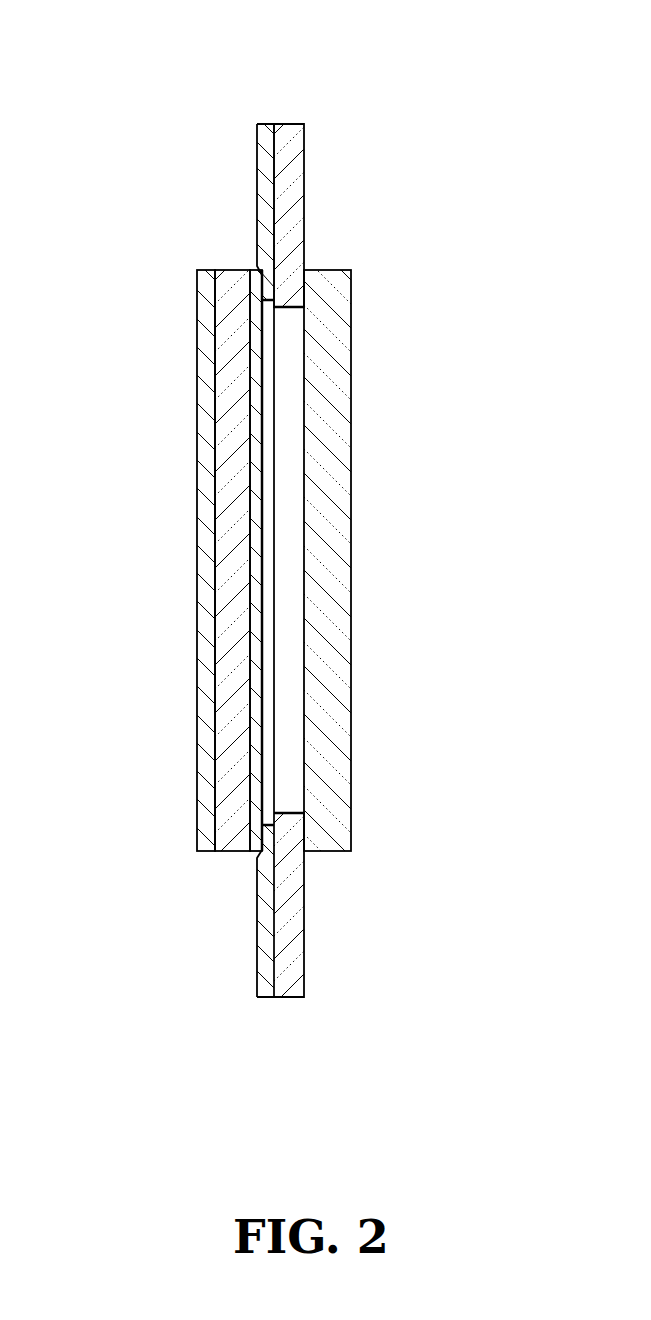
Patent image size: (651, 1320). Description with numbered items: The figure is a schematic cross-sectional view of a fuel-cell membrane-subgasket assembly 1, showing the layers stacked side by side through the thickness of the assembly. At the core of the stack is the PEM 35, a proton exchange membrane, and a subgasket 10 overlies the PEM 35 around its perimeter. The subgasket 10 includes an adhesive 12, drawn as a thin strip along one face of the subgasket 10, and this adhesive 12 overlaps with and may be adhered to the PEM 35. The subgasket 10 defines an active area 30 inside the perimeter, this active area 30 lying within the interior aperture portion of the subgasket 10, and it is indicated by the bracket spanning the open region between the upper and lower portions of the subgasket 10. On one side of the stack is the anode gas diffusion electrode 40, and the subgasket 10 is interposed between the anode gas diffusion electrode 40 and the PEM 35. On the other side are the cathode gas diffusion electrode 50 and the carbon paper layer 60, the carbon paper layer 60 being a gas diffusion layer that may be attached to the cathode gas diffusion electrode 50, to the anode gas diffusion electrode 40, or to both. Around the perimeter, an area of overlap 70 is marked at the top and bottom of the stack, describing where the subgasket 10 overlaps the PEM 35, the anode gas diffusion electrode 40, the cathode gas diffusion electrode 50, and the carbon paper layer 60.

The fuel-cell membrane-subgasket assembly 1 is at (522, 66).
The subgasket 10 is at (304, 163).
The adhesive 12 is at (257, 174).
The active area 30 is at (370, 306).
The PEM 35 is at (253, 852).
The anode gas diffusion electrode 40 is at (327, 850).
The cathode gas diffusion electrode 50 is at (223, 852).
The carbon paper layer 60 is at (202, 852).
The area of overlap 70 is at (164, 593).